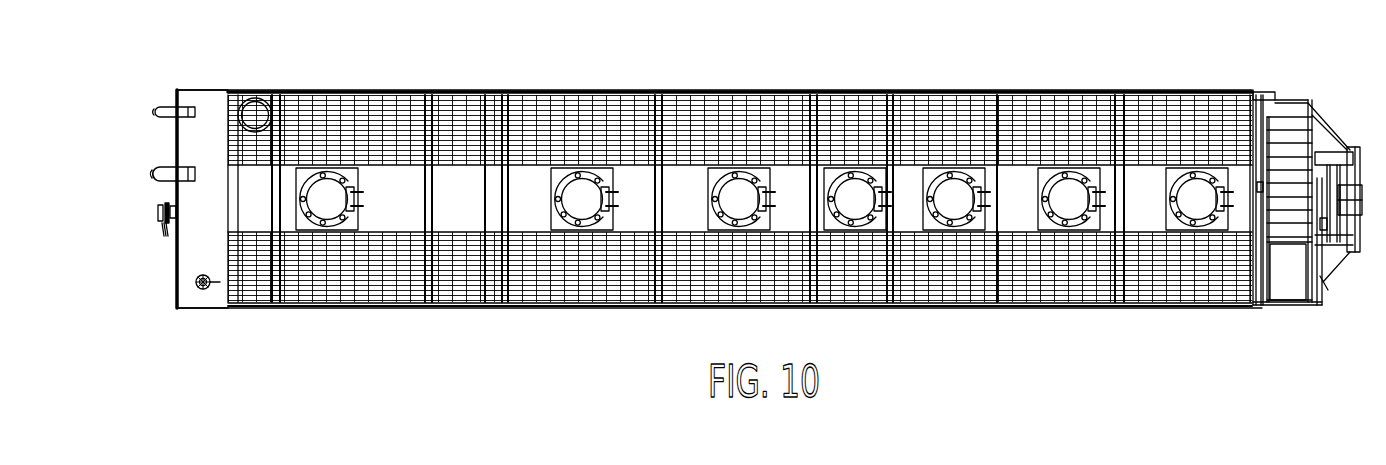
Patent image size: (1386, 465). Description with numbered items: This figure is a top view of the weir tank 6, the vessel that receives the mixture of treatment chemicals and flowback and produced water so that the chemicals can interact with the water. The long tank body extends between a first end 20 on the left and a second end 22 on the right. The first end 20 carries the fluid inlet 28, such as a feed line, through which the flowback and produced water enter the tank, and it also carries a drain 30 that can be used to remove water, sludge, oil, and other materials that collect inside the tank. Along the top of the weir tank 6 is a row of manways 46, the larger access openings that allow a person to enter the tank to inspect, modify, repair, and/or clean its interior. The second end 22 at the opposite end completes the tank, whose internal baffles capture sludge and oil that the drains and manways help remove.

The weir tank 6 is at (1073, 76).
The first end 20 is at (178, 285).
The second end 22 is at (1333, 265).
The fluid inlet 28 is at (153, 108).
The drain 30 is at (160, 210).
The manways 46 is at (1200, 195).